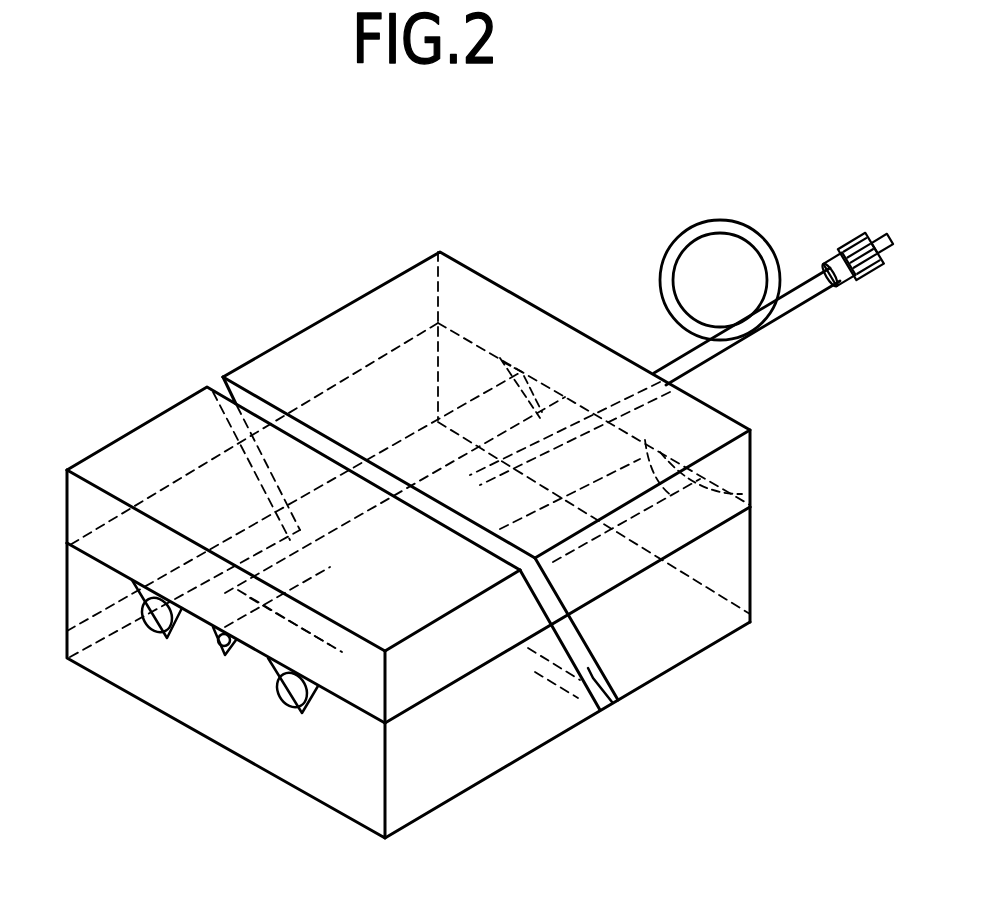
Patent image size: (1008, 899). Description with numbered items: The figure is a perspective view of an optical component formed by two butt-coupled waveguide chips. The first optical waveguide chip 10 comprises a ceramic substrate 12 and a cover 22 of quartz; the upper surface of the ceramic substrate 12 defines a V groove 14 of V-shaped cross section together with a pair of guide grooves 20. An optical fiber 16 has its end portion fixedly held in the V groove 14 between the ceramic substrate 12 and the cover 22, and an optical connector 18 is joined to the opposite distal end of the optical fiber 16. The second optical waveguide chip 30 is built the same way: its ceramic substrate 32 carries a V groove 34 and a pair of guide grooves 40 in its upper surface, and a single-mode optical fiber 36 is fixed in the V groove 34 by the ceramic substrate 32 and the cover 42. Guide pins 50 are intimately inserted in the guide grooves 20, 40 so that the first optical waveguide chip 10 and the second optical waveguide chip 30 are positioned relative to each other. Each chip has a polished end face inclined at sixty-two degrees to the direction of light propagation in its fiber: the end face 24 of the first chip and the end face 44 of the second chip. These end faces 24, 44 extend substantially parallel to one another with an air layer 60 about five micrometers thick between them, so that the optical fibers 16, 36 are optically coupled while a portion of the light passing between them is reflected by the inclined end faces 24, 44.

The first optical waveguide chip 10 is at (557, 268).
The ceramic substrate 12 is at (737, 590).
The V groove 14 is at (668, 403).
The optical fiber 16 is at (718, 222).
The optical connector 18 is at (843, 255).
The guide grooves 20 is at (540, 417).
The cover 22 is at (504, 303).
The end face 24 is at (590, 650).
The second optical waveguide chip 30 is at (158, 340).
The ceramic substrate 32 is at (493, 750).
The V groove 34 is at (230, 652).
The single-mode optical fiber 36 is at (218, 635).
The guide grooves 40 is at (133, 587).
The cover 42 is at (83, 497).
The end face 44 is at (572, 648).
The guide pins 50 is at (157, 618).
The air layer 60 is at (605, 693).